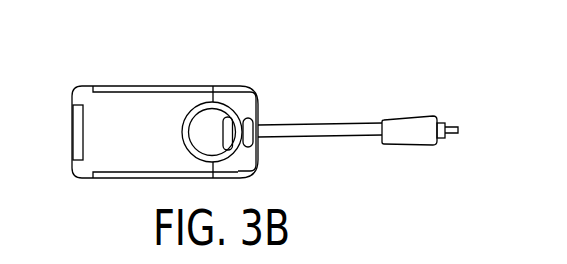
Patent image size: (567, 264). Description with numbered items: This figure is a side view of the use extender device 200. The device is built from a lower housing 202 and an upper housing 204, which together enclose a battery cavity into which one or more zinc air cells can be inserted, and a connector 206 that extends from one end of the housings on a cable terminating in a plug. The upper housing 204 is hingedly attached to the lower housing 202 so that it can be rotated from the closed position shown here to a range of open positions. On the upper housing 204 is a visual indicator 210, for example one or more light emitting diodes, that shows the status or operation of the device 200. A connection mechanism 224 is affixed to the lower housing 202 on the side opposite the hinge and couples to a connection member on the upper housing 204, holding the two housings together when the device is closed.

The use extender device 200 is at (174, 72).
The lower housing 202 is at (113, 107).
The upper housing 204 is at (243, 95).
The connector 206 is at (375, 122).
The visual indicator 210 is at (260, 113).
The connection mechanism 224 is at (245, 168).